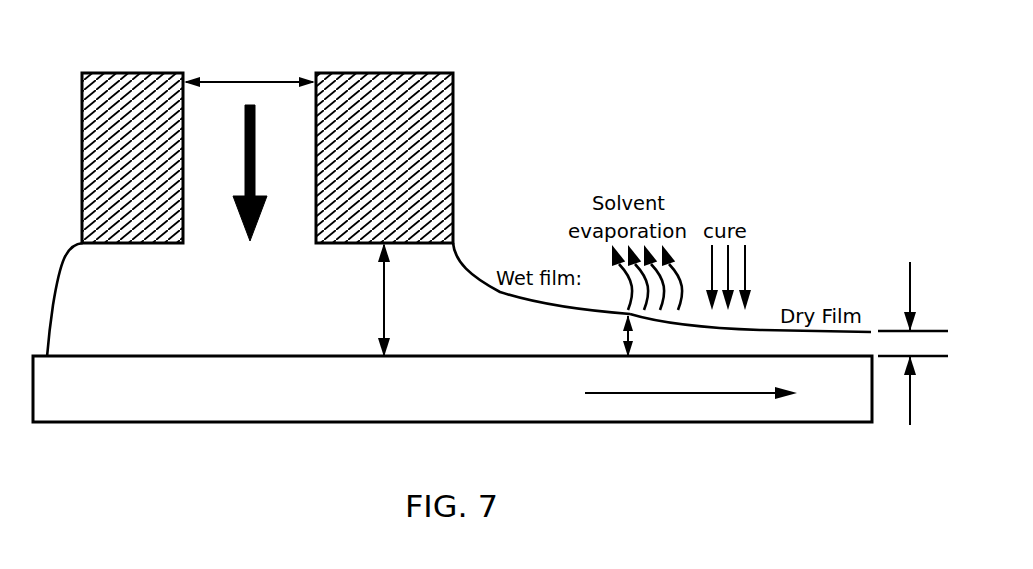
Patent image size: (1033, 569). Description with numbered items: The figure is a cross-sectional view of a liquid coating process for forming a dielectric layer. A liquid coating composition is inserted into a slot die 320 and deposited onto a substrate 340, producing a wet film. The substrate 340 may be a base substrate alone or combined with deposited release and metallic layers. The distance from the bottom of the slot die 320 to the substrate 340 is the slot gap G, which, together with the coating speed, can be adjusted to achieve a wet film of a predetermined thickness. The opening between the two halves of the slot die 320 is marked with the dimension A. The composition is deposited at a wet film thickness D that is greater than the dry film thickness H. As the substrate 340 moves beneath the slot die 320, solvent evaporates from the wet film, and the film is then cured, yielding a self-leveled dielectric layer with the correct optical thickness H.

The slot die 320 is at (383, 73).
The substrate 340 is at (82, 422).
The gap width between die blocks A is at (249, 70).
The slot gap G is at (392, 300).
The wet film thickness D is at (616, 336).
The dry film thickness H is at (913, 343).